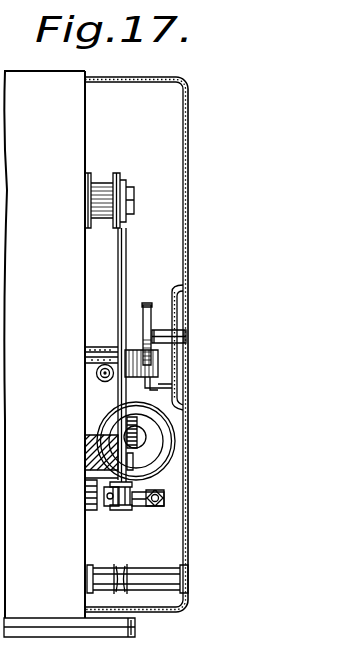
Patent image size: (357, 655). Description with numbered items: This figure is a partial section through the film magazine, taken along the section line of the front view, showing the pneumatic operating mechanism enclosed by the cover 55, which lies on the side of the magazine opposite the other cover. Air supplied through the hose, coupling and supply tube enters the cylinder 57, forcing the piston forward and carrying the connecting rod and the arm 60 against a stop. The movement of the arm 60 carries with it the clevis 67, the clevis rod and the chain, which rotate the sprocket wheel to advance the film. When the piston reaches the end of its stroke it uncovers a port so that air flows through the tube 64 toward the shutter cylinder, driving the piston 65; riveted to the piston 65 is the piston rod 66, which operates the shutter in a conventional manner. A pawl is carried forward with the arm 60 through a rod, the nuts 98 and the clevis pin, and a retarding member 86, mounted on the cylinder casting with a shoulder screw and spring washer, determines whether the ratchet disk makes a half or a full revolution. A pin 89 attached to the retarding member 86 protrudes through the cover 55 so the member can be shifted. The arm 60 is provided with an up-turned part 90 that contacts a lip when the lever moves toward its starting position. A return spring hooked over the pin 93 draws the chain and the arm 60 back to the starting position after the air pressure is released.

The cover 55 is at (188, 246).
The piston rod 66 is at (134, 208).
The arm 60 is at (127, 280).
The retarding member 86 is at (148, 306).
The pin 89 is at (186, 337).
The up-turned part 90 is at (135, 347).
The tube 64 is at (97, 380).
The cylinder 57 is at (160, 456).
The clevis 67 is at (113, 512).
The piston 65 is at (167, 508).
The nuts 98 is at (148, 508).
The pin 93 is at (153, 575).